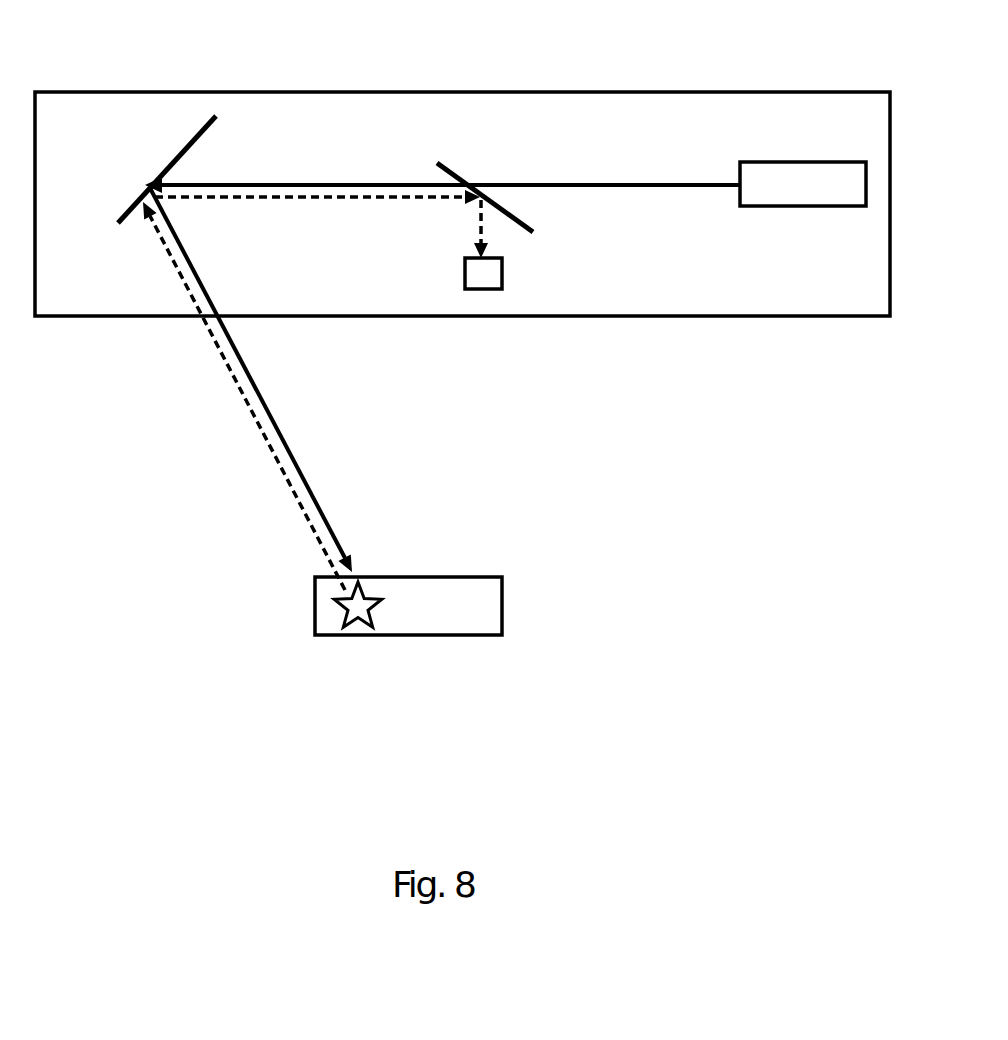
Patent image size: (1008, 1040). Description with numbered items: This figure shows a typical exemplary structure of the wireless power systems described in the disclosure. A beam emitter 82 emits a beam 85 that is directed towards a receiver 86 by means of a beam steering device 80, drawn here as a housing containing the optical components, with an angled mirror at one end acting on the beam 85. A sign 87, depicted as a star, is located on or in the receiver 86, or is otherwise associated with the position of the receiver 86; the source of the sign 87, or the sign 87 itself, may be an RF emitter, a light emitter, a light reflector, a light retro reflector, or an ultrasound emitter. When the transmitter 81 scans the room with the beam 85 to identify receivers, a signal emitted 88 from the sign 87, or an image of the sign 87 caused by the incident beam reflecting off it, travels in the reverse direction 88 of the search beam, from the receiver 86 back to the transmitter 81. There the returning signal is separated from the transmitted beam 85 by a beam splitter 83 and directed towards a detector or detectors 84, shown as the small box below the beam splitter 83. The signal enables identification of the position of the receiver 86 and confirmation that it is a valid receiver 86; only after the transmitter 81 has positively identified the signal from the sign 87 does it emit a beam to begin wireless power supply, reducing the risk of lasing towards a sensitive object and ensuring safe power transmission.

The beam steering device 80 is at (118, 223).
The transmitter 81 is at (143, 118).
The beam emitter 82 is at (808, 162).
The beam splitter 83 is at (450, 167).
The detector 84 is at (503, 285).
The beam 85 is at (627, 184).
The receiver 86 is at (502, 600).
The sign 87 is at (332, 604).
The signal emitted 88 is at (248, 403).